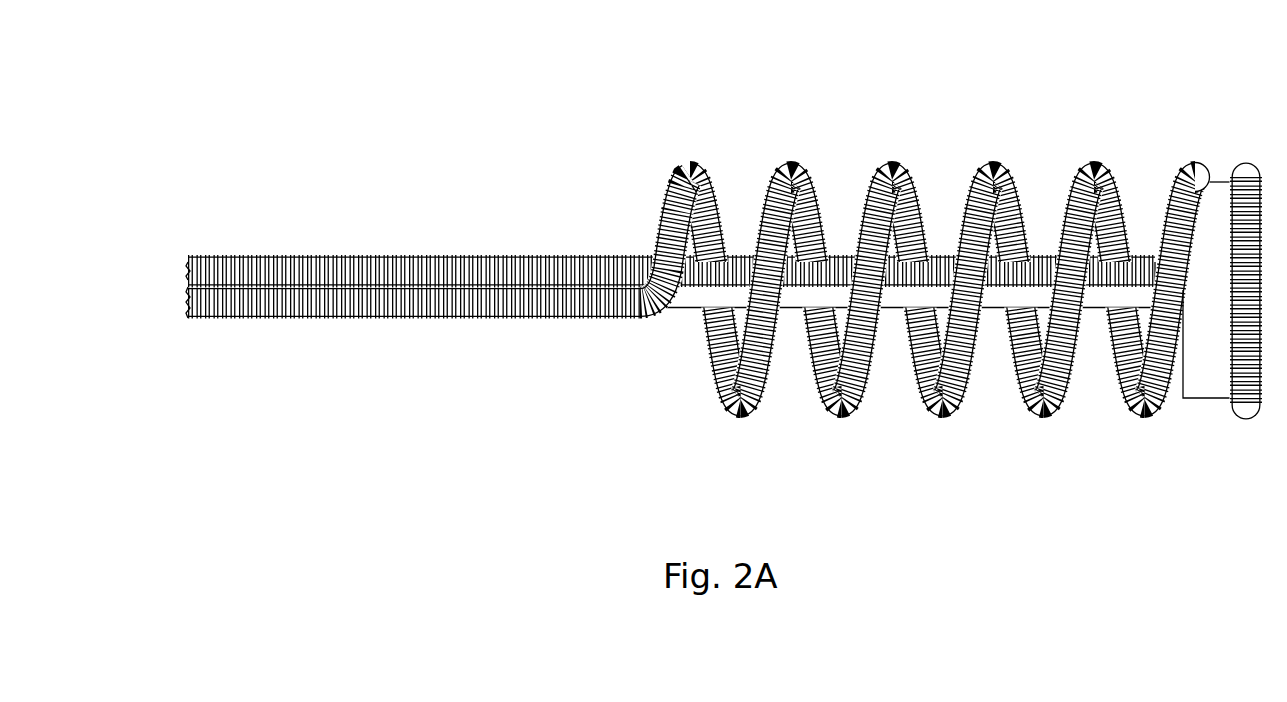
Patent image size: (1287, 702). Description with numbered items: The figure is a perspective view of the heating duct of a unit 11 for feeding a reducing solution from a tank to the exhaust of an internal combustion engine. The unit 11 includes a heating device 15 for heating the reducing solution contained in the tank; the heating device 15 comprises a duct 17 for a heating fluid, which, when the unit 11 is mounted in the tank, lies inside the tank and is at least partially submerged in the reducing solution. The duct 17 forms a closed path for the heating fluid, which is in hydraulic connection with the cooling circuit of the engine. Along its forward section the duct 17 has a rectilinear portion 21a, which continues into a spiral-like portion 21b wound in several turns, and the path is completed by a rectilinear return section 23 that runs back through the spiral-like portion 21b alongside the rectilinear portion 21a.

The unit 11 is at (716, 270).
The heating device 15 is at (896, 159).
The duct 17 is at (427, 250).
The rectilinear portion 21a is at (258, 320).
The spiral-like portion 21b is at (1095, 160).
The rectilinear return section 23 is at (1045, 257).